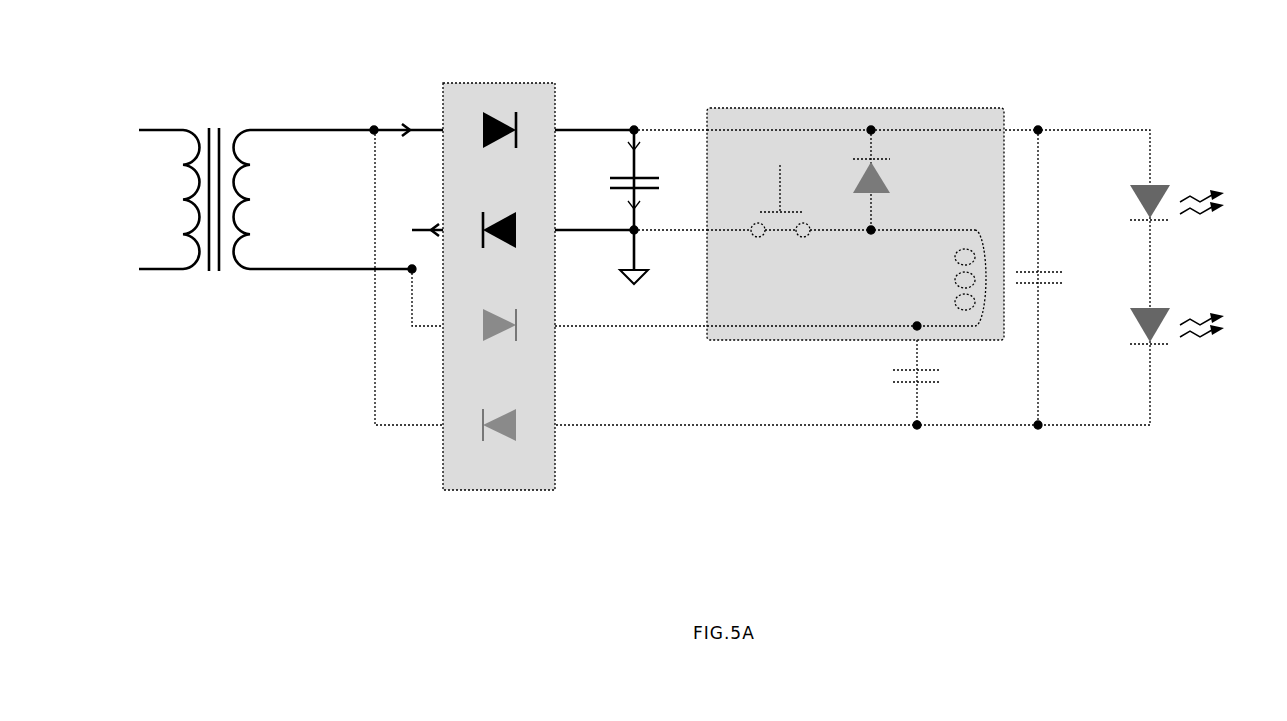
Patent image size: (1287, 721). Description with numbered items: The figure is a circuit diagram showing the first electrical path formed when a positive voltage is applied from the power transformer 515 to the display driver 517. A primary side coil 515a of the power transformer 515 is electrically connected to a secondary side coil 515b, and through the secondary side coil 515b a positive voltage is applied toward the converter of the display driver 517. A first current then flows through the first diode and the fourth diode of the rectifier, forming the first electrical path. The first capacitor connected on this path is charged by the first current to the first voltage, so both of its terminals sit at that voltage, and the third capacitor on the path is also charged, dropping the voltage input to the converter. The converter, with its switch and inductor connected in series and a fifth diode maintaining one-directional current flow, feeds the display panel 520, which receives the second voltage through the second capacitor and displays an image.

The power transformer 515 is at (291, 214).
The primary side coil 515a is at (160, 128).
The secondary side coil 515b is at (290, 128).
The display driver 517 is at (369, 463).
The display panel 520 is at (1186, 126).